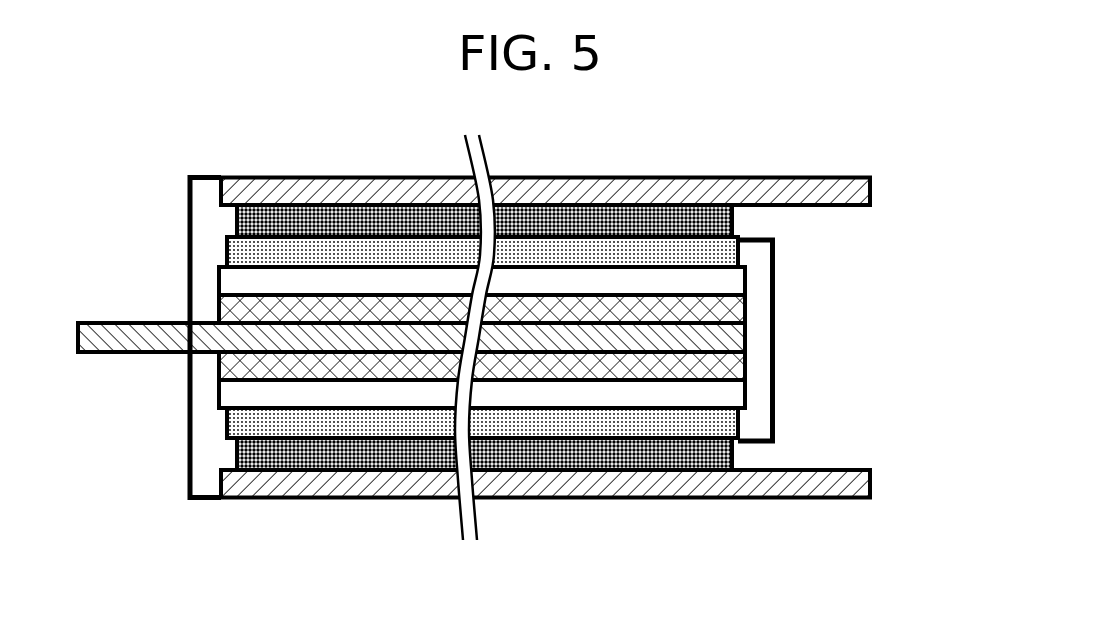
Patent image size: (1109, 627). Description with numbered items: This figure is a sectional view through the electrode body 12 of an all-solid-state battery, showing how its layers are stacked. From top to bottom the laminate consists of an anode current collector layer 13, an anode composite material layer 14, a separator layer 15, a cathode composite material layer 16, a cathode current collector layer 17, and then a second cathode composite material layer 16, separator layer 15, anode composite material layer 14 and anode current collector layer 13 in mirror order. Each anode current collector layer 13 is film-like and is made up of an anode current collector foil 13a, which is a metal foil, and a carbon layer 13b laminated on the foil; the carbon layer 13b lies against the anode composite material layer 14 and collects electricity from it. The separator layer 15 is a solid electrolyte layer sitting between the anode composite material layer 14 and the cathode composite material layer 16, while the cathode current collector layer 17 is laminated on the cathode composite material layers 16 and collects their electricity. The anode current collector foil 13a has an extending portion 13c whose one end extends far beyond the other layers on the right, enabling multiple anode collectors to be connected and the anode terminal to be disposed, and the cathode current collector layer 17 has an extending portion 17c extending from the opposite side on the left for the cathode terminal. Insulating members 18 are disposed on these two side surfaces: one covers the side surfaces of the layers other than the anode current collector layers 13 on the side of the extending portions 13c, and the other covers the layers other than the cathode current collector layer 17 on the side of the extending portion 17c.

The electrode body 12 is at (141, 143).
The anode current collector layer 13 is at (932, 172).
The anode current collector foil 13a is at (858, 199).
The carbon layer 13b is at (733, 225).
The extending portion 13c is at (865, 172).
The anode composite material layer 14 is at (740, 253).
The separator layer 15 is at (715, 285).
The cathode composite material layer 16 is at (745, 313).
The cathode current collector layer 17 is at (715, 342).
The extending portion 17c is at (175, 312).
The insulating member 18 is at (200, 243).